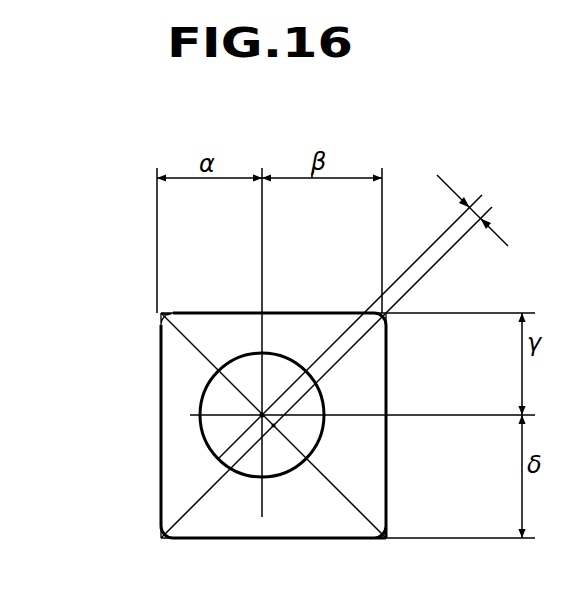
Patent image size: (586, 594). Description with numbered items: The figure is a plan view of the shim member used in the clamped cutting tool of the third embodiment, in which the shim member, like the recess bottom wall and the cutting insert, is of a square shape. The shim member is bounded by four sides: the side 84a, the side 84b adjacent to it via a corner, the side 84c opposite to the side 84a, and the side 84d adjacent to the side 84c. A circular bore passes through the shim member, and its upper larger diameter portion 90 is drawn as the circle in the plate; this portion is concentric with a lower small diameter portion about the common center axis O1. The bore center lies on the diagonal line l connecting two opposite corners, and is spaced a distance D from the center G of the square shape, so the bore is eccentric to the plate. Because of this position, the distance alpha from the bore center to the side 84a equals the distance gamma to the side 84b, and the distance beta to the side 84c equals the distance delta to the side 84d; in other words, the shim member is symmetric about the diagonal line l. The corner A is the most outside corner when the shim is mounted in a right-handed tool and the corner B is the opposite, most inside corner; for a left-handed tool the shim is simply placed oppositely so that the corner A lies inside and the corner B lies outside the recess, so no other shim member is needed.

The side of shim member 84a is at (160, 424).
The side of shim member 84b is at (312, 313).
The side of shim member 84c is at (387, 383).
The side of shim member 84d is at (307, 539).
The upper larger diameter portion 90 is at (231, 358).
The corner A is at (161, 527).
The corner B is at (390, 330).
The center of shim member G is at (274, 426).
The center axis O1 is at (203, 434).
The diagonal line l is at (330, 482).
The distance D is at (334, 350).